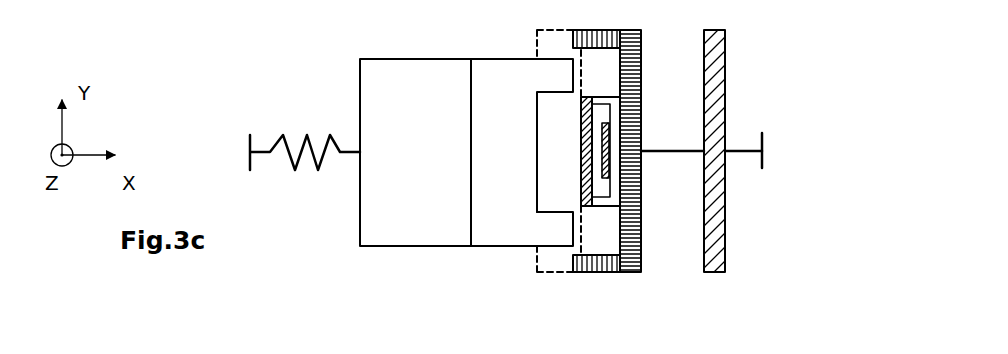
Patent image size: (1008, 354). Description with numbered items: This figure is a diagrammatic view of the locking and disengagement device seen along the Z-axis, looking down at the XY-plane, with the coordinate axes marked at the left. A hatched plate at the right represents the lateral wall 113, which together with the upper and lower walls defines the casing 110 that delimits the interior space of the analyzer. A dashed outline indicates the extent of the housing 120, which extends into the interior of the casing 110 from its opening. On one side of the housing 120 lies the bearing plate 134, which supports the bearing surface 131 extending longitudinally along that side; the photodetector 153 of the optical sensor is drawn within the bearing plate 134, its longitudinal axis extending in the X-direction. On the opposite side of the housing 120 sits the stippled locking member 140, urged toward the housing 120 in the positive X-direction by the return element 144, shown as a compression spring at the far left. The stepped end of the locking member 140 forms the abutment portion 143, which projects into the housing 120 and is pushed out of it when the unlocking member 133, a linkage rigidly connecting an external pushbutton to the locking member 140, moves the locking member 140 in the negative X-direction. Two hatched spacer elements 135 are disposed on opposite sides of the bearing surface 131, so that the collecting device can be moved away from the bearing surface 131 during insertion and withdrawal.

The casing 110 is at (730, 53).
The lateral wall 113 is at (725, 88).
The housing 120 is at (534, 255).
The bearing surface 131 is at (583, 112).
The unlocking member 133 is at (769, 135).
The bearing plate 134 is at (605, 120).
The spacer element 135 is at (568, 273).
The locking member 140 is at (357, 65).
The abutment portion 143 is at (554, 251).
The return element 144 is at (278, 140).
The photodetector 153 is at (608, 150).